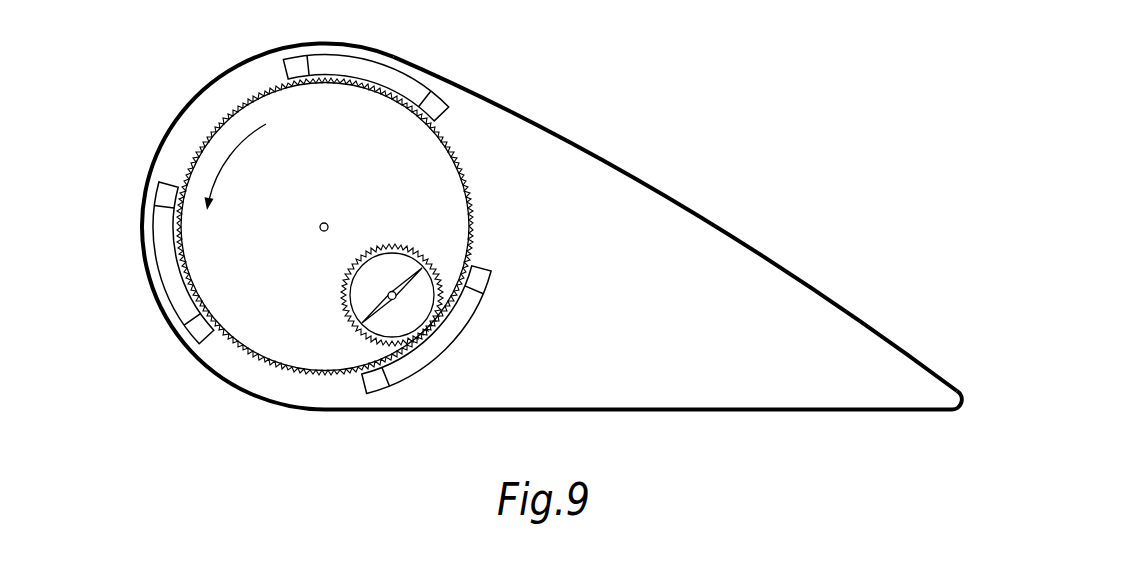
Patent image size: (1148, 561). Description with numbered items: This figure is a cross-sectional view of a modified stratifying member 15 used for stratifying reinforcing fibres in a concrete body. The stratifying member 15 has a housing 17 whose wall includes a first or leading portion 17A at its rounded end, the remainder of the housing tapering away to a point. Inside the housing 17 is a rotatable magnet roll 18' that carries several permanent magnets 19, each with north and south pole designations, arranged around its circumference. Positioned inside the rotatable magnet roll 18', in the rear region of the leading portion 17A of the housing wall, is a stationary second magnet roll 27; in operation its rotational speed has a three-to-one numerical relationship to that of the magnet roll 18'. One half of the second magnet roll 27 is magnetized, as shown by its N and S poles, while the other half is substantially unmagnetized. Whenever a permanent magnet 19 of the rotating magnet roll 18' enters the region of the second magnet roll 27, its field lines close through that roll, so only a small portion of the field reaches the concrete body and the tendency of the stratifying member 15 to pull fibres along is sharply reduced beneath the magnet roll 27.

The stratifying member 15 is at (552, 245).
The housing 17 is at (747, 243).
The first or leading portion of the housing wall 17A is at (231, 387).
The rotatable magnet roll 18' is at (353, 226).
The permanent magnets 19 is at (382, 73).
The second magnet roll 27 is at (395, 245).